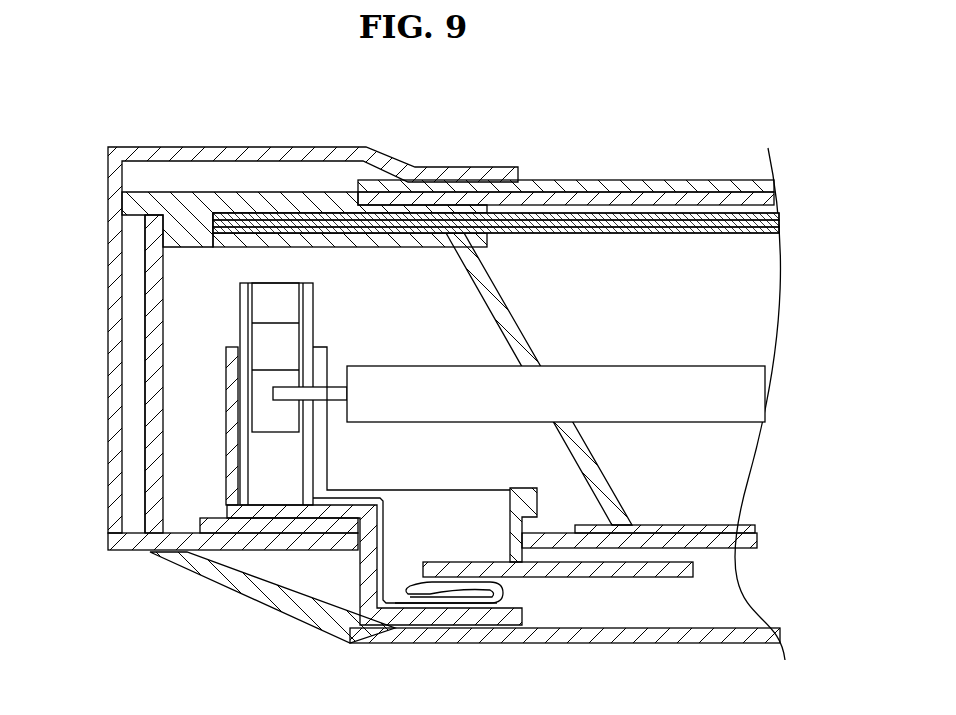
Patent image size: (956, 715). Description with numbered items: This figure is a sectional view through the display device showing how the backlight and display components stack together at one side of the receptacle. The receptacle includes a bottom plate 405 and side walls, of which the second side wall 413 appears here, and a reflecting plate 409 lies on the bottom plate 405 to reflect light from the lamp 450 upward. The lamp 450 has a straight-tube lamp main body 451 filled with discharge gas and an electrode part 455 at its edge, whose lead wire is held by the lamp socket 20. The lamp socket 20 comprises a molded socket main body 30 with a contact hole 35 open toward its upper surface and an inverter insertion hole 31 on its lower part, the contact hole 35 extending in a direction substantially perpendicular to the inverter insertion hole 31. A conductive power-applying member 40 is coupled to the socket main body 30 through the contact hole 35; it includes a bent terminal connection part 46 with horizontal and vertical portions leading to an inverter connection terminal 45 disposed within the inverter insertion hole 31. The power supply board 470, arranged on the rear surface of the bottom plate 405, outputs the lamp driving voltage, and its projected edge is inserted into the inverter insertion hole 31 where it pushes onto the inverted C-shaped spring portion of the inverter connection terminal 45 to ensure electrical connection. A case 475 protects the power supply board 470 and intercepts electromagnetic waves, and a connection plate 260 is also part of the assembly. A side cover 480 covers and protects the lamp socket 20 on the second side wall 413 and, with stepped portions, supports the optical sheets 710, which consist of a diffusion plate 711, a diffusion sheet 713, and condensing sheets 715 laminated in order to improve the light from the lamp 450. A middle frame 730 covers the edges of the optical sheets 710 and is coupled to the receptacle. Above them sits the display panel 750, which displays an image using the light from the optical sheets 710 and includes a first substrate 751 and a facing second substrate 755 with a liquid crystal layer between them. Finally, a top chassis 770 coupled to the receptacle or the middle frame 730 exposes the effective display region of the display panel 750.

The top chassis 770 is at (120, 170).
The middle frame 730 is at (142, 205).
The side cover 480 is at (256, 240).
The second side wall 413 is at (157, 458).
The display panel 750 is at (566, 134).
The second substrate 755 is at (593, 182).
The first substrate 751 is at (650, 200).
The optical sheets 710 is at (554, 227).
The condensing sheets 715 is at (767, 217).
The diffusion sheet 713 is at (767, 224).
The diffusion plate 711 is at (767, 231).
The lamp socket 20 is at (179, 394).
The power-applying member 40 is at (267, 305).
The socket main body 30 is at (232, 376).
The contact hole 35 is at (321, 326).
The lamp 450 is at (539, 278).
The electrode part 455 is at (335, 392).
The lamp main body 451 is at (428, 377).
The terminal connection part 46 is at (378, 522).
The inverter connection terminal 45 is at (450, 608).
The connection plate 260 is at (233, 525).
The bottom plate 405 is at (307, 542).
The reflecting plate 409 is at (742, 529).
The power supply board 470 is at (665, 568).
The case 475 is at (525, 645).
The inverter insertion hole 31 is at (523, 597).